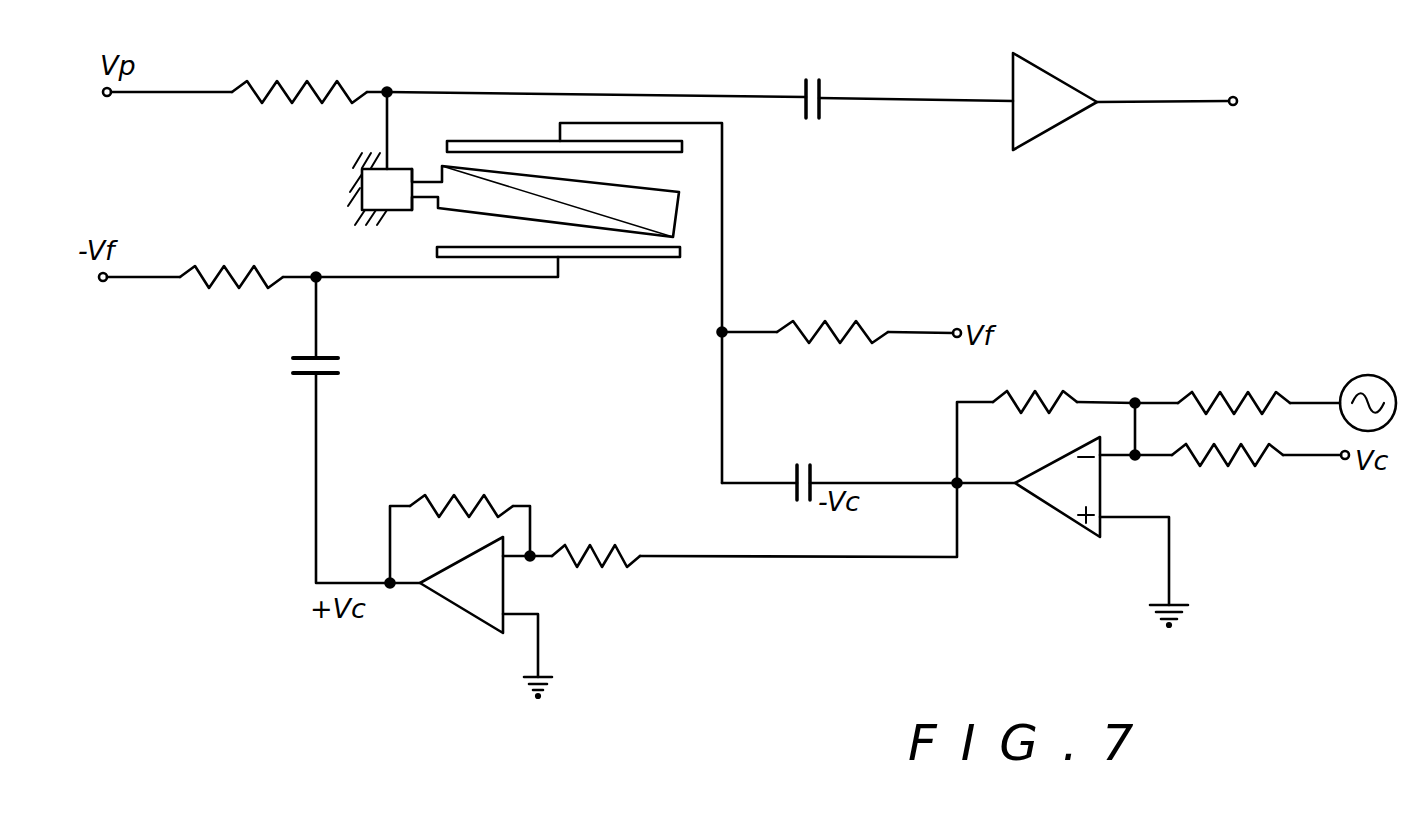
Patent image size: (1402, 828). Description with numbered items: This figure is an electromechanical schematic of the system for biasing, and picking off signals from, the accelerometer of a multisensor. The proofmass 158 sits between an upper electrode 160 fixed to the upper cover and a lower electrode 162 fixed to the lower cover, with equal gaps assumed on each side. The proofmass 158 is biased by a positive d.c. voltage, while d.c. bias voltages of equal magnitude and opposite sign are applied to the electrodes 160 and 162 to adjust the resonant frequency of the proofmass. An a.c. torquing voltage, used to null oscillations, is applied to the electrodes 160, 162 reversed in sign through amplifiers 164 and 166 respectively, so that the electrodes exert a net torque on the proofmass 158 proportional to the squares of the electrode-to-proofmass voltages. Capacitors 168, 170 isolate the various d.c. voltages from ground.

The proofmass 158 is at (618, 196).
The upper electrode 160 is at (508, 140).
The lower electrode 162 is at (585, 258).
The amplifier 164 is at (1054, 517).
The amplifier 166 is at (472, 620).
The capacitor 168 is at (340, 367).
The capacitor 170 is at (821, 469).